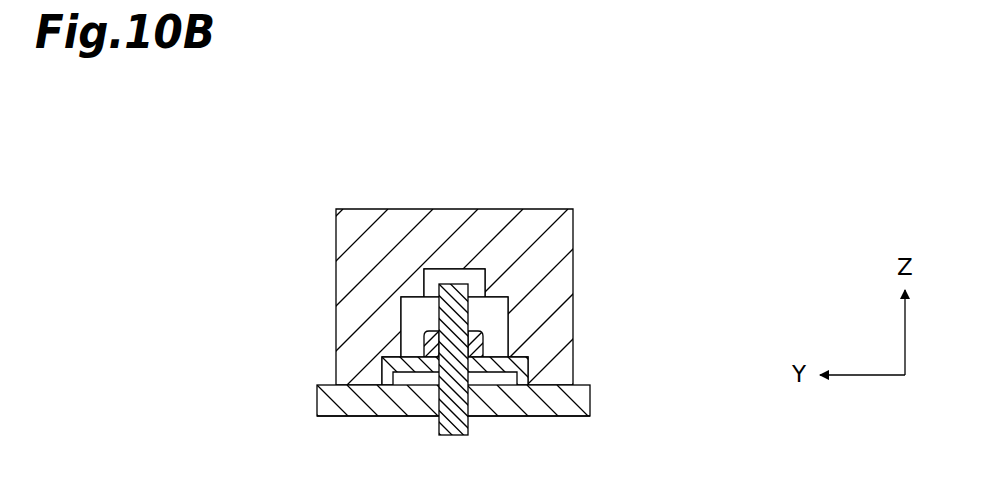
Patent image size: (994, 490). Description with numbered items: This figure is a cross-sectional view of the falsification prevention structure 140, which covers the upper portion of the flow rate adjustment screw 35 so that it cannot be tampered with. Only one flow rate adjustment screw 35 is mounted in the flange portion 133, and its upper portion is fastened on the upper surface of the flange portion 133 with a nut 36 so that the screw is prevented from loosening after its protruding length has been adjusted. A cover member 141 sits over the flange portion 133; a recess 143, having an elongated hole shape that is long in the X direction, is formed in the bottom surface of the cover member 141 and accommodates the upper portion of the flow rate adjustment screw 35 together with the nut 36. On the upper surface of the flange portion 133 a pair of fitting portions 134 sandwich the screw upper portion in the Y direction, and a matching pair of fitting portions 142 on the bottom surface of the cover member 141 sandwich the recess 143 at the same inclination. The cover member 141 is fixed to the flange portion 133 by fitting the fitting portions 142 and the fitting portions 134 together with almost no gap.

The falsification prevention structure 140 is at (720, 226).
The cover member 141 is at (543, 213).
The recess 143 is at (413, 312).
The nut 36 is at (483, 333).
The fitting portion 142 is at (385, 357).
The flange portion 133 is at (586, 398).
The fitting portion 134 is at (383, 374).
The flow rate adjustment screw 35 is at (462, 283).